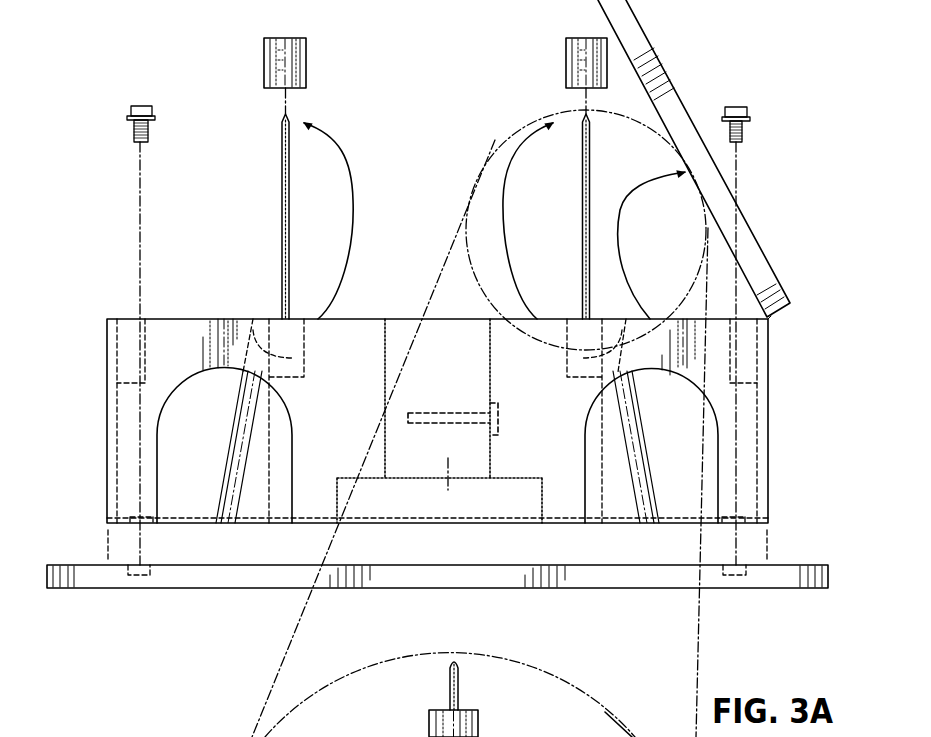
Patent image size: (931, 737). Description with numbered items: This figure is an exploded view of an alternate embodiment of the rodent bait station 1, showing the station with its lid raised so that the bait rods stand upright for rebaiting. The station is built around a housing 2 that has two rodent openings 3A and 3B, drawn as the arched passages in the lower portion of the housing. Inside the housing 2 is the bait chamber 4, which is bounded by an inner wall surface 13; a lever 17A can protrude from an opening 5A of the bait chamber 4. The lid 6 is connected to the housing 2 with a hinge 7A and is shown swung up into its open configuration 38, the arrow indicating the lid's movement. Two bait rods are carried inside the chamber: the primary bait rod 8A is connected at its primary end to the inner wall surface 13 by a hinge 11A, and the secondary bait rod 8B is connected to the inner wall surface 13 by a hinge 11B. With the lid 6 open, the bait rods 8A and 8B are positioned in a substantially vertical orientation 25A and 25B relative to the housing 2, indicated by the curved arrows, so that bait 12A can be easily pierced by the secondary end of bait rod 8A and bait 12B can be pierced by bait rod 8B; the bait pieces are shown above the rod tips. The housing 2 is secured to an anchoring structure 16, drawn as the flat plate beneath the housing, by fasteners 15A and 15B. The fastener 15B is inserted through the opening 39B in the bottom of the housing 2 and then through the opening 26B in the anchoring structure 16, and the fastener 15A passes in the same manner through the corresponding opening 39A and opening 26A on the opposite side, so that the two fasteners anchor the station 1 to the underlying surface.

The rodent bait station 1 is at (730, 33).
The housing 2 is at (107, 370).
The opening 3A is at (193, 498).
The opening 3B is at (680, 498).
The bait chamber 4 is at (340, 370).
The opening of bait chamber 5A is at (448, 470).
The lid 6 is at (760, 248).
The hinge 7A is at (772, 319).
The primary bait rod 8A is at (283, 180).
The secondary bait rod 8B is at (583, 283).
The hinge 11A is at (253, 319).
The hinge 11B is at (626, 319).
The bait 12A is at (306, 70).
The bait 12B is at (566, 70).
The inner wall surface 13 is at (293, 500).
The fastener 15A is at (134, 130).
The fastener 15B is at (745, 128).
The anchoring structure 16 is at (97, 577).
The lever 17A is at (450, 428).
The substantially vertical orientation 25A is at (350, 167).
The substantially vertical orientation 25B is at (502, 207).
The first plate bore 26A is at (135, 577).
The opening 26B is at (728, 577).
The open configuration 38 is at (625, 217).
The first bottom recess 39A is at (133, 522).
The opening 39B is at (740, 520).